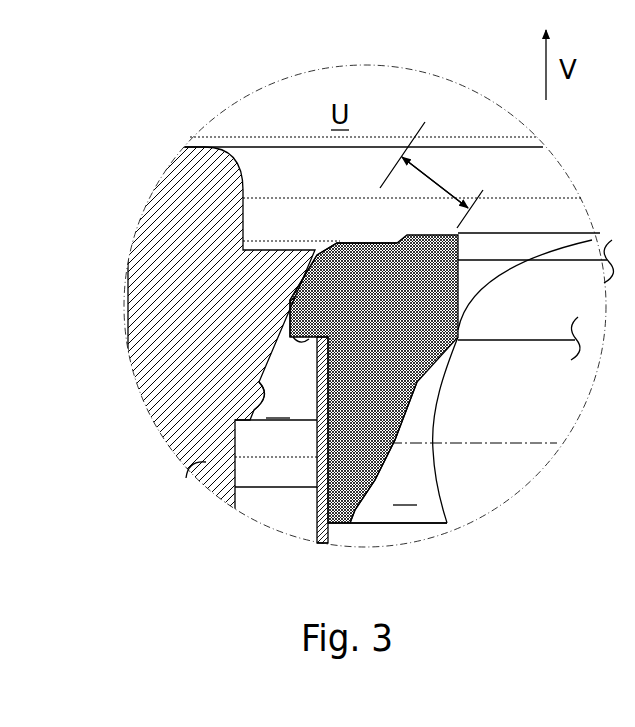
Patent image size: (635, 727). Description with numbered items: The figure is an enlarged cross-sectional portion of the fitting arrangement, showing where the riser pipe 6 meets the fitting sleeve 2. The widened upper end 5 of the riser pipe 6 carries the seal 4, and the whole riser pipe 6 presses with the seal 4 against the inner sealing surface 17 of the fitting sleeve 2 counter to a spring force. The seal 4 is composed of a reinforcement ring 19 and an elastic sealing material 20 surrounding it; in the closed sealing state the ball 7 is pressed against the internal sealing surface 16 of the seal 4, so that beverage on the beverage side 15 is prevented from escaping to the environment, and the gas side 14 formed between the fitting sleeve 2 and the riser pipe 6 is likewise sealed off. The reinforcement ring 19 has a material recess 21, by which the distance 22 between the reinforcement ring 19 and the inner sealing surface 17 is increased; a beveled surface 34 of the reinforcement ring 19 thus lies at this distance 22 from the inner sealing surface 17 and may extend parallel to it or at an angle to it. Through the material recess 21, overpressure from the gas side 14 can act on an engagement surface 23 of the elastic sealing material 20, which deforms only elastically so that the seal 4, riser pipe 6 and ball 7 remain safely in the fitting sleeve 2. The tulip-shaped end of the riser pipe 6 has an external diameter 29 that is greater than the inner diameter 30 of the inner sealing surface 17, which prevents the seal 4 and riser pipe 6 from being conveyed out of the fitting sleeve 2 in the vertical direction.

The fitting sleeve 2 is at (137, 298).
The seal 4 is at (338, 242).
The upper end 5 is at (317, 528).
The riser pipe 6 is at (335, 537).
The ball 7 is at (550, 412).
The gas side 14 is at (277, 403).
The beverage side 15 is at (398, 499).
The internal sealing surface 16 is at (413, 405).
The inner sealing surface 17 is at (256, 408).
The reinforcement ring 19 is at (422, 505).
The elastic sealing material 20 is at (300, 306).
The material recess 21 is at (324, 256).
The distance 22 is at (432, 172).
The engagement surface 23 is at (292, 343).
The external diameter 29 is at (515, 340).
The inner diameter 30 is at (517, 260).
The beveled surface 34 is at (317, 420).